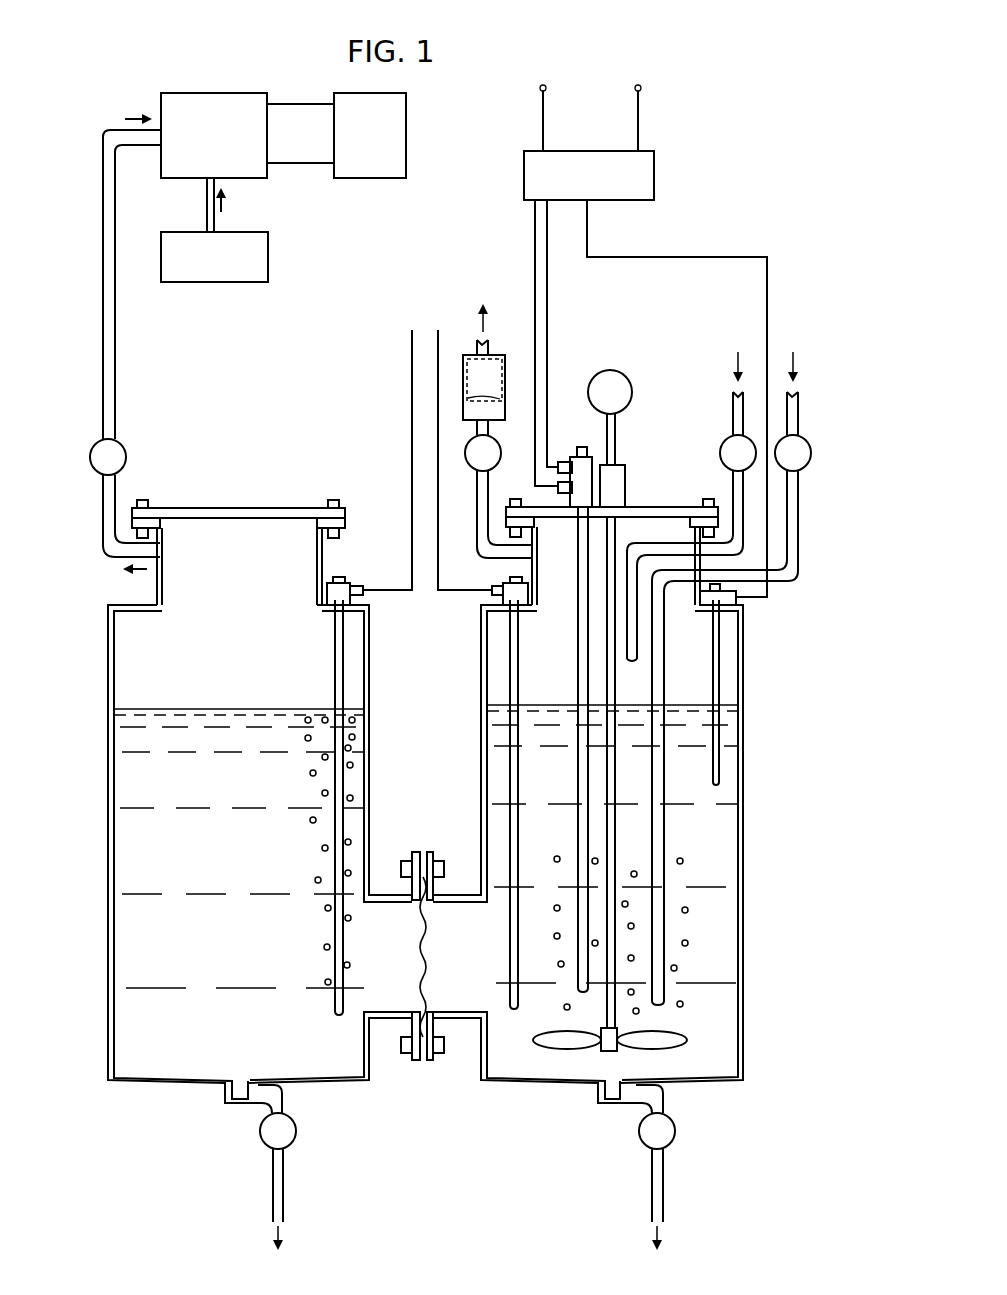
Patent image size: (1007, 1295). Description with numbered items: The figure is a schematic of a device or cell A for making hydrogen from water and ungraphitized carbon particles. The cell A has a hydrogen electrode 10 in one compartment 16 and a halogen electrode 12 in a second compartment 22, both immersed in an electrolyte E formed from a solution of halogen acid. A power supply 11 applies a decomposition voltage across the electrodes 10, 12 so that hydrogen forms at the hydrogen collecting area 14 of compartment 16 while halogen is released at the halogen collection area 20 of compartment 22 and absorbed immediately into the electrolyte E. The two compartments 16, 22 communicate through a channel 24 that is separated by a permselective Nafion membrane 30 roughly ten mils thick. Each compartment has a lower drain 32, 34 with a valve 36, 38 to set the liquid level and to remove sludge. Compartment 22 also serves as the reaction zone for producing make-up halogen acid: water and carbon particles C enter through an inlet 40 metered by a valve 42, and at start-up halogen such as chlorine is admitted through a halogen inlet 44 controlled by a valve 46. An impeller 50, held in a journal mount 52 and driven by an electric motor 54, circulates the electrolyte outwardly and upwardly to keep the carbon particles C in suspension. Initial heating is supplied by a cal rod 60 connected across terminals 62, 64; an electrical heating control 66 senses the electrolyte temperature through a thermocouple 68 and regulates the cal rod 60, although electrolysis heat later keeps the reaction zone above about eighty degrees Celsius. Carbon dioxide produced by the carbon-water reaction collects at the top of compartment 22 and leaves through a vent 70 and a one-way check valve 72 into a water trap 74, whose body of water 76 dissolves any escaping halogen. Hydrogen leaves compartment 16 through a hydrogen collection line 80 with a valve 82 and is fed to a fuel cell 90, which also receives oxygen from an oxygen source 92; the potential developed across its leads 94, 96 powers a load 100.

The hydrogen electrode 10 is at (334, 680).
The power supply 11 is at (422, 316).
The halogen electrode 12 is at (518, 660).
The hydrogen collecting area 14 is at (305, 775).
The compartment 16 is at (108, 778).
The halogen collection area 20 is at (527, 781).
The compartment 22 is at (741, 778).
The channel 24 is at (396, 893).
The membrane 30 is at (423, 955).
The lower drain 32 is at (286, 1106).
The lower drain 34 is at (664, 1100).
The valve 36 is at (297, 1133).
The valve 38 is at (676, 1133).
The inlet 40 is at (733, 488).
The valve or metering device 42 is at (722, 461).
The halogen inlet 44 is at (796, 576).
The valve 46 is at (804, 440).
The impeller 50 is at (672, 1041).
The journal mount 52 is at (625, 490).
The electric motor 54 is at (624, 372).
The cal rod 60 is at (577, 692).
The terminal 62 is at (558, 489).
The terminal 64 is at (567, 457).
The electrical heating control 66 is at (574, 151).
The thermocouple 68 is at (712, 776).
The vent 70 is at (498, 557).
The one-way check valve 72 is at (476, 466).
The water trap 74 is at (506, 358).
The body of water 76 is at (487, 397).
The hydrogen collection line 80 is at (104, 546).
The valve 82 is at (91, 454).
The fuel cell 90 is at (232, 92).
The oxygen source 92 is at (268, 253).
The lead 94 is at (319, 102).
The lead 96 is at (313, 162).
The load 100 is at (406, 113).
The device or cell A is at (371, 441).
The carbon particles C is at (560, 964).
The electrolyte E is at (685, 699).